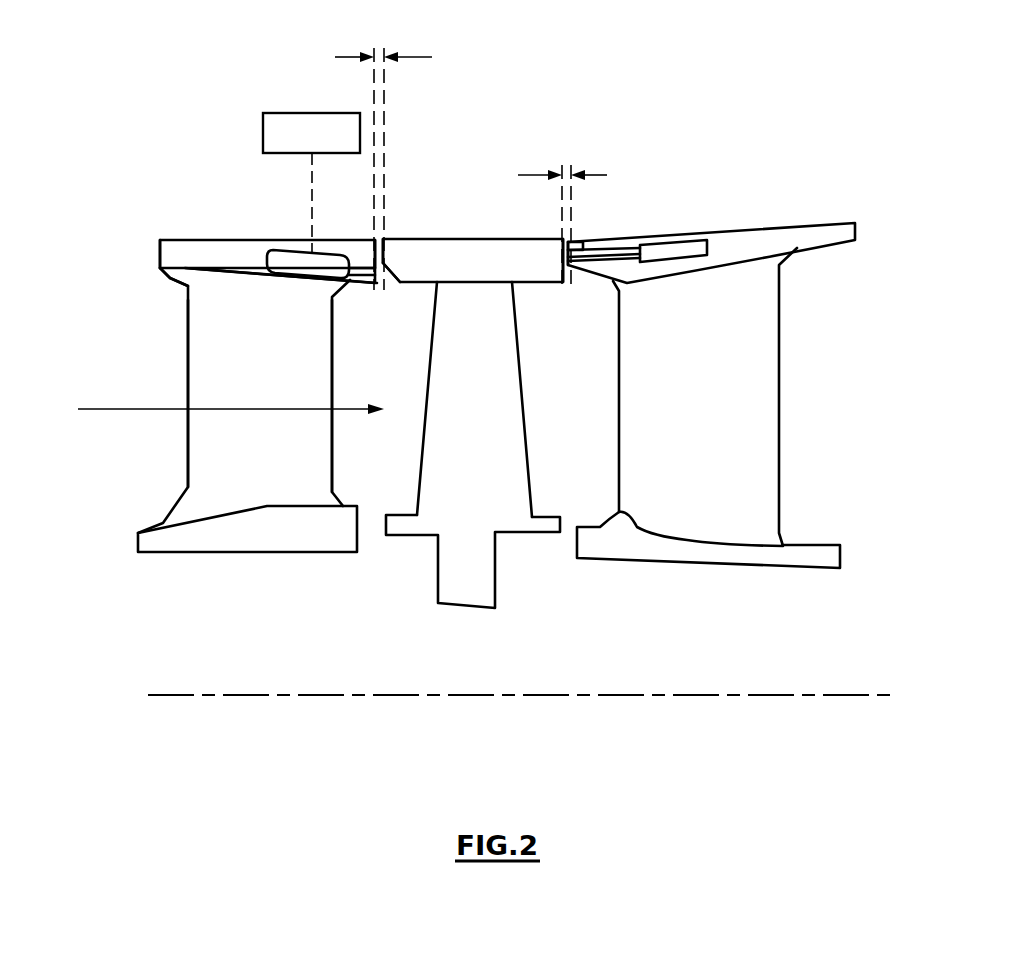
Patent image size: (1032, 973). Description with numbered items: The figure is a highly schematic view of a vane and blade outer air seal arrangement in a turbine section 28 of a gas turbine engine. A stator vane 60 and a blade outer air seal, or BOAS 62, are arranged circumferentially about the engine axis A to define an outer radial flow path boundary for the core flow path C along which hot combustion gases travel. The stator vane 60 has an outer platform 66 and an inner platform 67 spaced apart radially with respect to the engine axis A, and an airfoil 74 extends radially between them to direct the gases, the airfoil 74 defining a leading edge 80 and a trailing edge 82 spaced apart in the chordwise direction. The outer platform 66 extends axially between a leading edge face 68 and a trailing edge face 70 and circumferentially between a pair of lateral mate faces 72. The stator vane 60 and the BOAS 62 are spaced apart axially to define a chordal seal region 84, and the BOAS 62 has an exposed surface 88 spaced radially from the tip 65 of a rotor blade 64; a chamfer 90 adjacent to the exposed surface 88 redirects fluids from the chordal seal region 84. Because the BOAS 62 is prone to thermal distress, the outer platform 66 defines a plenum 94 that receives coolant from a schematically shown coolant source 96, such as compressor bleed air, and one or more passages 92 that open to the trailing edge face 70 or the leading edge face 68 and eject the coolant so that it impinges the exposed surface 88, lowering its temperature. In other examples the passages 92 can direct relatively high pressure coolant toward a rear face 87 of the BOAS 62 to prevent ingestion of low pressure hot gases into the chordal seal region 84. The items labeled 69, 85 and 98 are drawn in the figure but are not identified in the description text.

The turbine section 28 is at (143, 157).
The stator vane 60 is at (166, 212).
The blade outer air seal (BOAS) 62 is at (443, 228).
The rotor blade 64 is at (534, 548).
The tip 65 is at (501, 282).
The outer platform 66 is at (229, 228).
The inner platform 67 is at (207, 562).
The leading edge face 68 is at (162, 251).
The fillet 69 is at (243, 277).
The trailing edge face 70 is at (377, 247).
The lateral mate face 72 is at (192, 253).
The airfoil 74 is at (256, 364).
The leading edge 80 is at (187, 447).
The trailing edge 82 is at (332, 443).
The chordal seal region 84 is at (338, 57).
The platform mate face 85 is at (384, 264).
The rear face 87 is at (568, 250).
The exposed surface 88 is at (543, 285).
The chamfer 90 is at (388, 262).
The passage 92 is at (362, 272).
The plenum 94 is at (289, 252).
The coolant source 96 is at (298, 147).
The seal member 98 is at (374, 282).
The engine axis A is at (770, 697).
The core flow path C is at (218, 409).